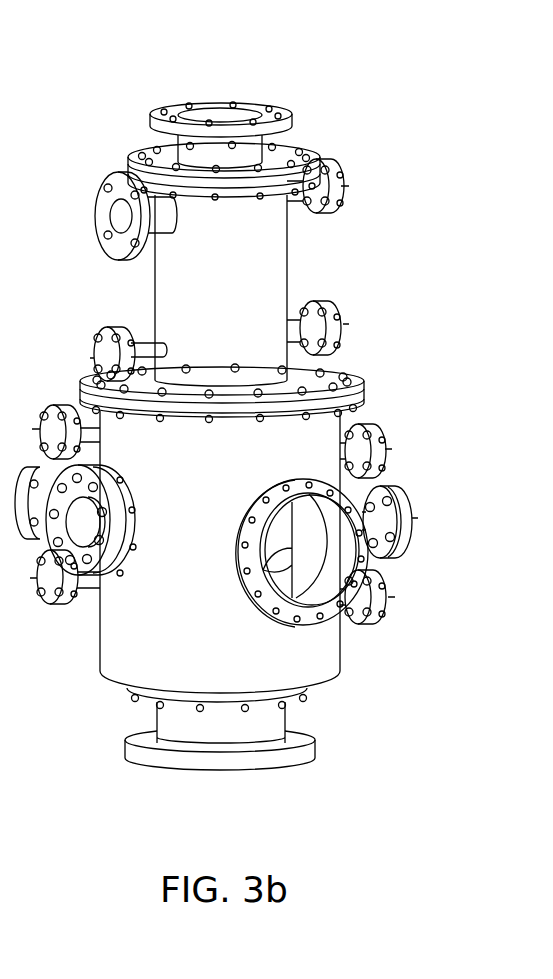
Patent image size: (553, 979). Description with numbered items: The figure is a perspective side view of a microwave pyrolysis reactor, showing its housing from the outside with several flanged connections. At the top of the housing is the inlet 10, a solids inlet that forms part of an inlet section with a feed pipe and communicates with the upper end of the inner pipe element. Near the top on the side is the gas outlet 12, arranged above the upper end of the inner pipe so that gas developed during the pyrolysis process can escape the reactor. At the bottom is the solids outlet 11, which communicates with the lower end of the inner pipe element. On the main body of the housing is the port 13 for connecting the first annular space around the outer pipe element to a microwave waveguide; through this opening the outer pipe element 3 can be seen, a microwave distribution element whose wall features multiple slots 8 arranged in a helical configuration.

The inlet 10 is at (204, 113).
The gas outlet 12 is at (120, 210).
The outer pipe element 3 is at (283, 518).
The slots 8 is at (270, 567).
The port 13 is at (320, 580).
The solids outlet 11 is at (222, 772).